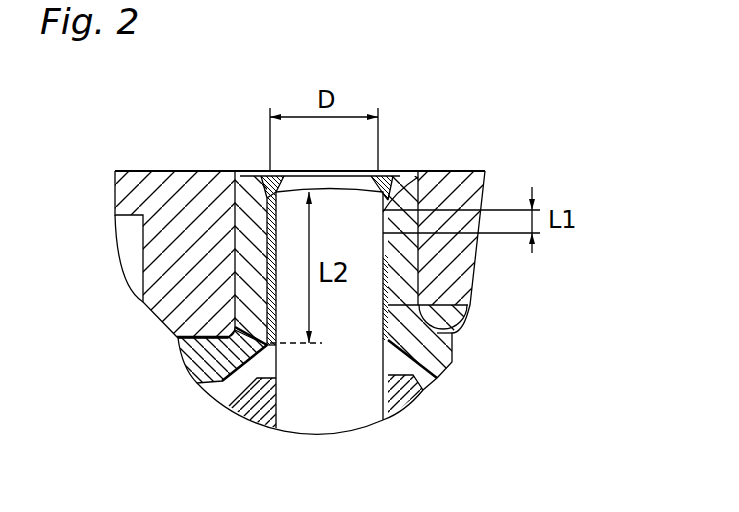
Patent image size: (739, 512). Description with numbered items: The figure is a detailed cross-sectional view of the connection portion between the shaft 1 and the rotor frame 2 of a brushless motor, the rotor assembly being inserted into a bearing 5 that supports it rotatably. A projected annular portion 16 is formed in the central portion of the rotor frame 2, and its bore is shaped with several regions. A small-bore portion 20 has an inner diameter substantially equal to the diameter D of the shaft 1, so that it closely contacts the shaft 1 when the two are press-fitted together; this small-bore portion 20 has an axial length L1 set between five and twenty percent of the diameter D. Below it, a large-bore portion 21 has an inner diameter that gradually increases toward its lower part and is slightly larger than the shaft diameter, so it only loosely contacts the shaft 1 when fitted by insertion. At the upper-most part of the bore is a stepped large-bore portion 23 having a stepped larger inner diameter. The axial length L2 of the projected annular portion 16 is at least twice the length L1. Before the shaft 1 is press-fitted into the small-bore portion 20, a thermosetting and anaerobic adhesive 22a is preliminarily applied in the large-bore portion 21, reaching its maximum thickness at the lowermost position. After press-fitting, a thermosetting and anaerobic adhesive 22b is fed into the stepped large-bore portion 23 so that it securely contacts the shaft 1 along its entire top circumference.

The shaft 1 is at (327, 410).
The rotor frame 2 is at (197, 358).
The bearing 5 is at (405, 400).
The projected annular portion 16 is at (233, 180).
The small-bore portion 20 is at (450, 168).
The large-bore portion 21 is at (452, 308).
The thermosetting and anaerobic adhesive 22a is at (270, 348).
The thermosetting and anaerobic adhesive 22b is at (375, 183).
The stepped large-bore portion 23 is at (276, 188).